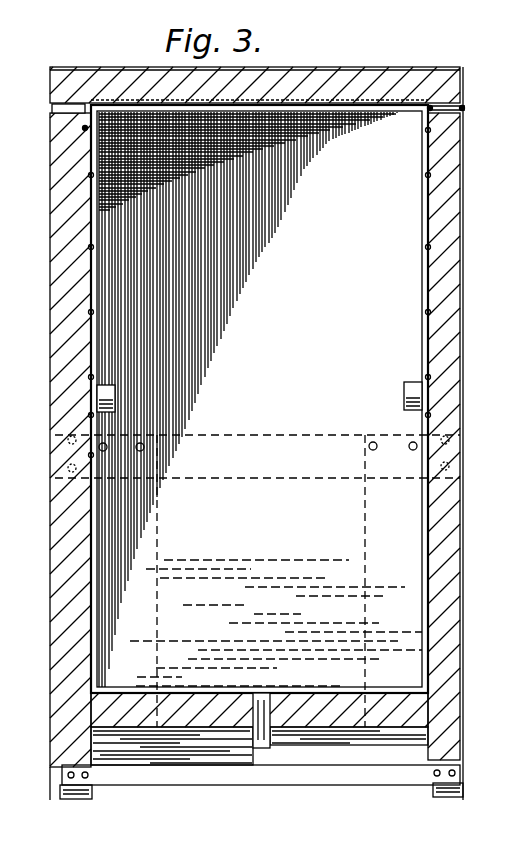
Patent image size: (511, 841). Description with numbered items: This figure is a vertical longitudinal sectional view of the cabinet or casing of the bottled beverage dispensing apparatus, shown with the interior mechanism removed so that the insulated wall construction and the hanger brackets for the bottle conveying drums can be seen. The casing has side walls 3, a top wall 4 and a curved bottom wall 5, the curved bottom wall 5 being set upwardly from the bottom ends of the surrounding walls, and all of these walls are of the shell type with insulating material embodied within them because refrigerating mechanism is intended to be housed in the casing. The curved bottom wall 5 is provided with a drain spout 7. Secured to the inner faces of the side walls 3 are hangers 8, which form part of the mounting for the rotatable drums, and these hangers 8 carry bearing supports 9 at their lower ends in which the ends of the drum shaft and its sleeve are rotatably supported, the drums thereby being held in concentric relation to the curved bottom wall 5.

The side wall 3 is at (70, 284).
The top member 4 is at (340, 80).
The bottom member 5 is at (328, 702).
The central support post 7 is at (257, 750).
The inner lining / mesh box 8 is at (96, 300).
The bracket 9 is at (117, 402).